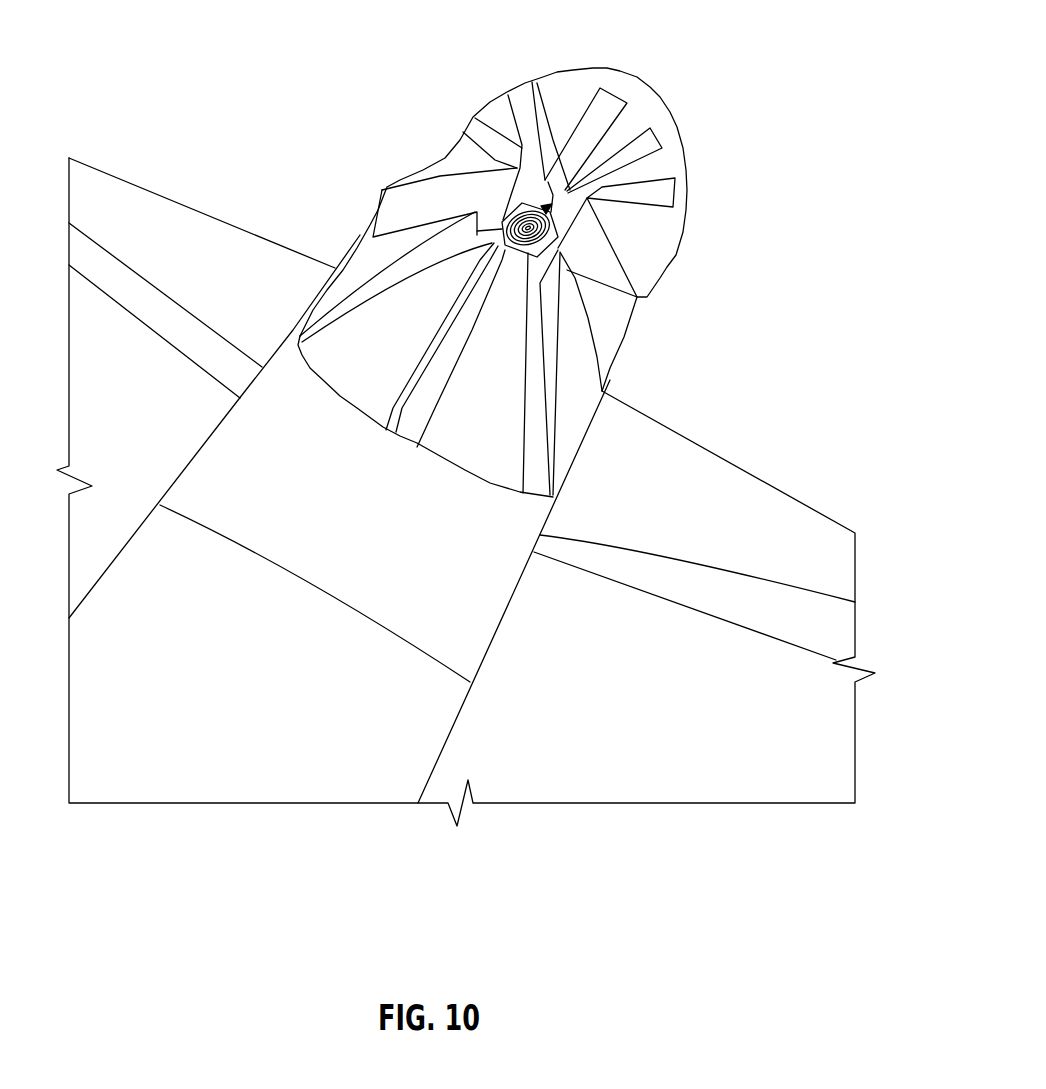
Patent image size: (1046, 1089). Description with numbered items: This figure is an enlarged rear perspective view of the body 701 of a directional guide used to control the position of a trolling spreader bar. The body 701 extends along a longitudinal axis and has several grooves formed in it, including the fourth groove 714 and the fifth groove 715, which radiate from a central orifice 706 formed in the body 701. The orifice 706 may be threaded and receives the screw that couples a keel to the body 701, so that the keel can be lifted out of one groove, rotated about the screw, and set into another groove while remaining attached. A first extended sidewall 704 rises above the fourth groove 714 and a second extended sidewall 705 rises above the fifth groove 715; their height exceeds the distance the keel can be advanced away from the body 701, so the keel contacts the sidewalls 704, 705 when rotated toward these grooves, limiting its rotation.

The body 701 is at (633, 708).
The first extended sidewall 704 is at (396, 188).
The second extended sidewall 705 is at (612, 233).
The orifice 706 is at (647, 92).
The fourth groove 714 is at (413, 209).
The fifth groove 715 is at (594, 300).